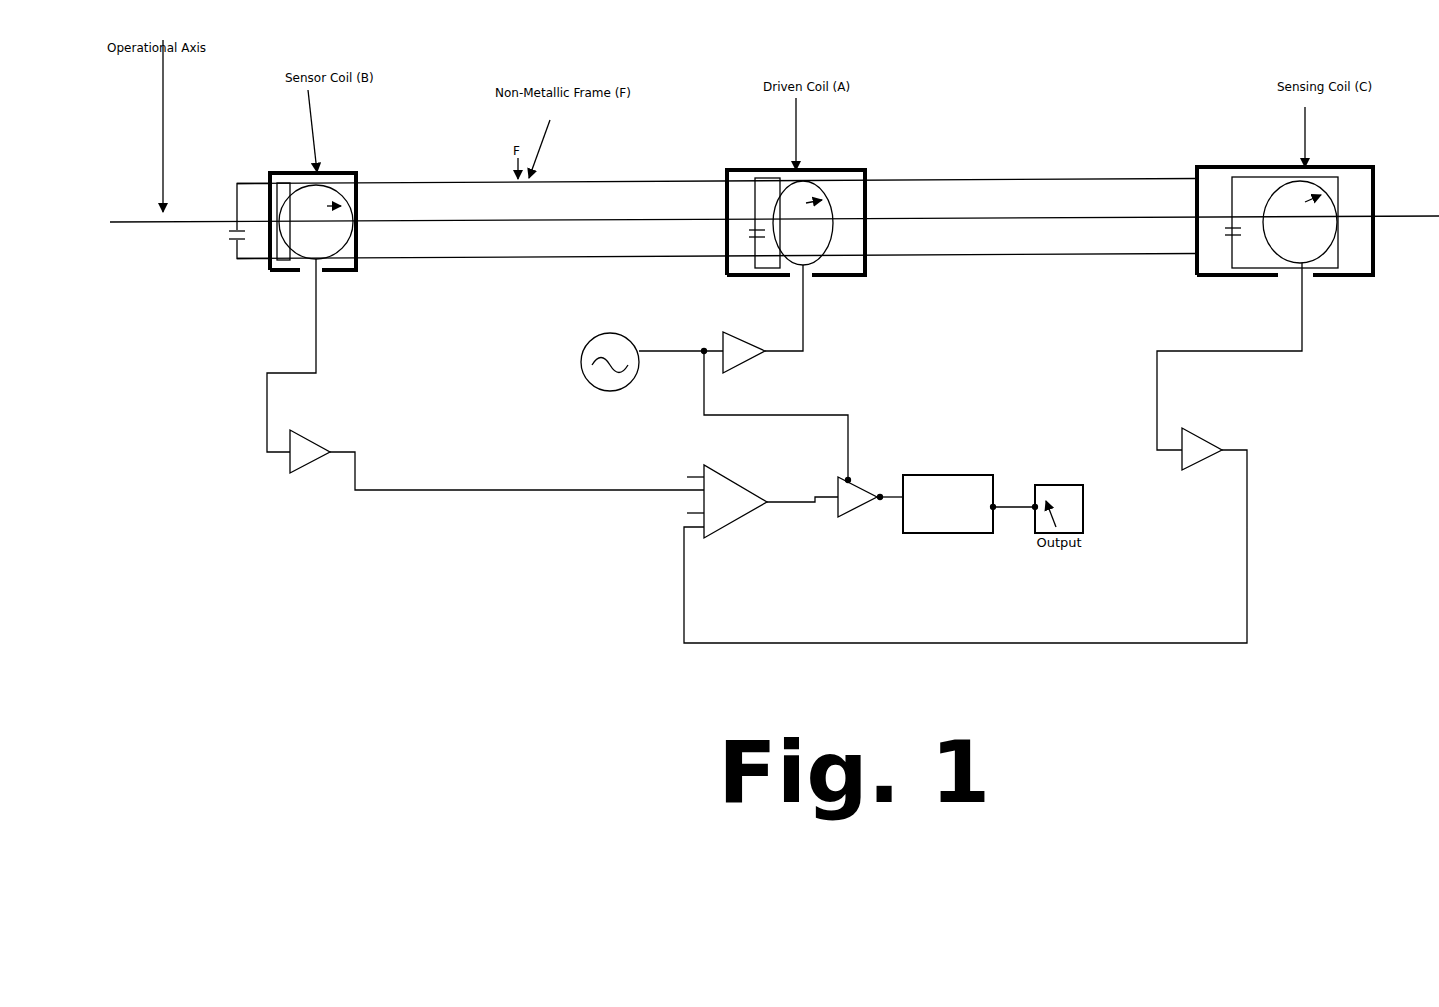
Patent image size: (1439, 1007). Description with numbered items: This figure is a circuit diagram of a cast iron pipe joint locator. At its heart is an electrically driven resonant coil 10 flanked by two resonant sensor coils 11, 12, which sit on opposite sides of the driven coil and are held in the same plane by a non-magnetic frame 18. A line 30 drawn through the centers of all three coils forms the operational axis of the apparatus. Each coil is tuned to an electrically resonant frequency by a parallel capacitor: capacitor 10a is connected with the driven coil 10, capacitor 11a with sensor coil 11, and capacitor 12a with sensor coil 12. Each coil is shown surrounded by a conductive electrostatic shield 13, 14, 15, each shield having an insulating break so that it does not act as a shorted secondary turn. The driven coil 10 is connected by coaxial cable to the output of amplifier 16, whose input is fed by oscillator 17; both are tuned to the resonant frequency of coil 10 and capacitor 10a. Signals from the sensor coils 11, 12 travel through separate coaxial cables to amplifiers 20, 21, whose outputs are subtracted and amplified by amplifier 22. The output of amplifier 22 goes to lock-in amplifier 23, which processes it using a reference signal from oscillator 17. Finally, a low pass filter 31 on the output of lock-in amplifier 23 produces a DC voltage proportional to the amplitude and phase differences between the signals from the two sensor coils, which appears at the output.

The electrically driven resonant coil 10 is at (806, 183).
The parallel capacitor 10a is at (750, 240).
The resonant sensor coil 11 is at (320, 184).
The parallel capacitor 11a is at (232, 244).
The resonant sensor coil 12 is at (1308, 178).
The parallel capacitor 12a is at (1228, 238).
The conductive electrostatic shield 13 is at (750, 170).
The conductive electrostatic shield 14 is at (360, 243).
The conductive electrostatic shield 15 is at (1348, 277).
The amplifier 16 is at (750, 357).
The oscillator 17 is at (582, 382).
The non-magnetic frame 18 is at (472, 255).
The amplifier 20 is at (300, 472).
The amplifier 21 is at (1205, 432).
The amplifier 22 is at (743, 517).
The lock-in amplifier 23 is at (853, 513).
The line 30 is at (564, 222).
The low pass filter 31 is at (940, 475).